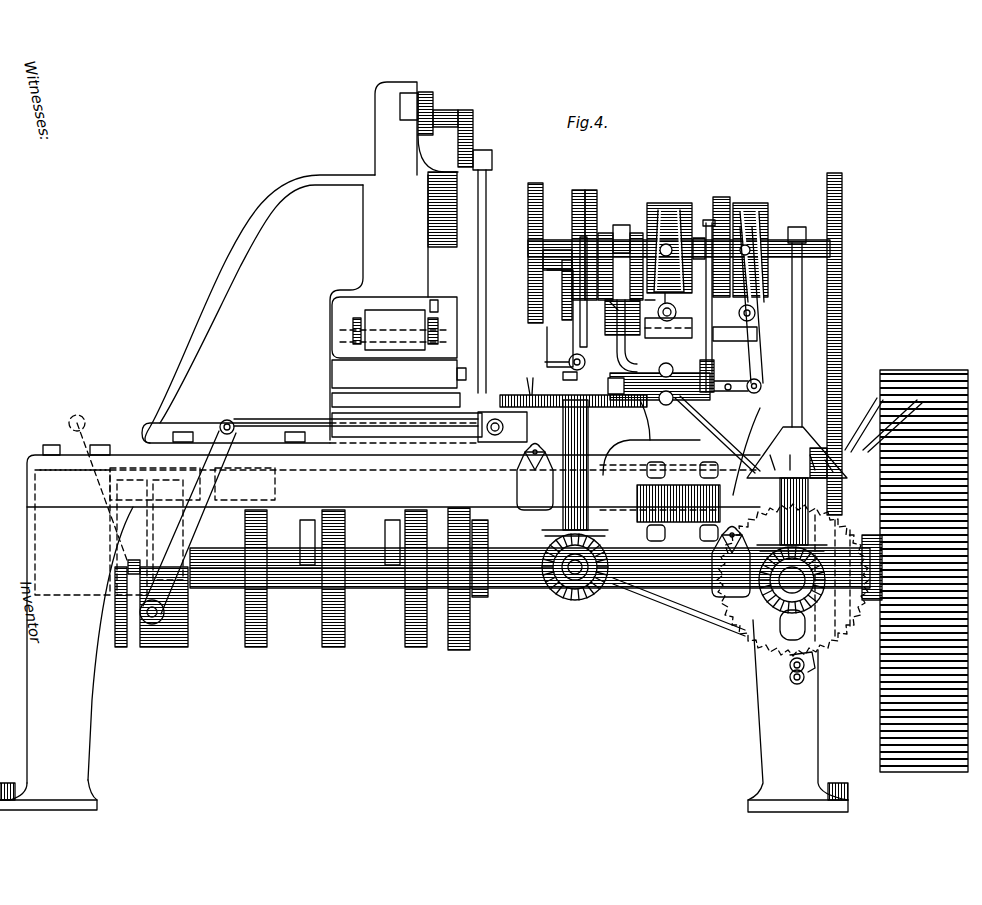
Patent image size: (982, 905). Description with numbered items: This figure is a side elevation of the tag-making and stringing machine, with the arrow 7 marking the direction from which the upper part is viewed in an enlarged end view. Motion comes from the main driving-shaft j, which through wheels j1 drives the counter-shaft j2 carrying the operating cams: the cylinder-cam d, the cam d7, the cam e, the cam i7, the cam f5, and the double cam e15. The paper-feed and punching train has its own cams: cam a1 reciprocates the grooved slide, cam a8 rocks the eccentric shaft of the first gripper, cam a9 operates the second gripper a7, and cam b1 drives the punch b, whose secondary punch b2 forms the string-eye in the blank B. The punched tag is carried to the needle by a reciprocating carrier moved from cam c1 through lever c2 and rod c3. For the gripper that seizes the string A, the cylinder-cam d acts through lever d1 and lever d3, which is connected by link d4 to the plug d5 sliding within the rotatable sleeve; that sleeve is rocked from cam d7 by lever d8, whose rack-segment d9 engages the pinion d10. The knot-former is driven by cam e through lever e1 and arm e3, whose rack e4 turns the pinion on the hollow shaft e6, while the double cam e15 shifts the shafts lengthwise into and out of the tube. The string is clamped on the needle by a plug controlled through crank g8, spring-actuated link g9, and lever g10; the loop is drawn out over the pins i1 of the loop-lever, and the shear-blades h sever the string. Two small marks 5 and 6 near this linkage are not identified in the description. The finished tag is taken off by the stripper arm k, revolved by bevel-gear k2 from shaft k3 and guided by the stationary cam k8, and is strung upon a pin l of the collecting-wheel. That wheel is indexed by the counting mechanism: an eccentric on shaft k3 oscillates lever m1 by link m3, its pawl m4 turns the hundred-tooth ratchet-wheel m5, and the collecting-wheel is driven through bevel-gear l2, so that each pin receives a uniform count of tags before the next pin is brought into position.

The punch b is at (412, 220).
The secondary punch b2 is at (438, 306).
The second gripper a7 is at (442, 320).
The arrow 7 is at (518, 234).
The double cam e15 is at (540, 183).
The cam f5 is at (578, 190).
The cam i7 is at (592, 192).
The counter-shaft j2 is at (552, 250).
The crank g8 is at (580, 250).
The spring-actuated link g9 is at (604, 235).
The lever g10 is at (634, 235).
The cam e is at (673, 210).
The cam d7 is at (724, 200).
The cylinder-cam d is at (762, 210).
The hollow shaft e6 is at (547, 352).
The shear-blades h is at (586, 362).
The rack e4 is at (566, 374).
The arm k is at (528, 380).
The stationary cam k8 is at (536, 396).
The arm e3 is at (658, 311).
The lever e1 is at (680, 318).
The section line 5 is at (648, 300).
The section line 6 is at (613, 298).
The lever d1 is at (756, 313).
The lever d8 is at (706, 340).
The rack-segment d9 is at (716, 364).
The plug d5 is at (730, 380).
The lever d3 is at (758, 356).
The link d4 is at (755, 392).
The pinion d10 is at (706, 398).
The pins l is at (798, 445).
The pins i1 is at (797, 452).
The wheels j1 is at (845, 655).
The rod c3 is at (235, 424).
The lever c2 is at (188, 527).
The cam c1 is at (151, 613).
The cam a8 is at (256, 588).
The cam a9 is at (323, 588).
The cam a1 is at (406, 588).
The cam b1 is at (469, 579).
The main driving-shaft j is at (510, 580).
The bevel-gear k2 is at (548, 534).
The shaft k3 is at (575, 585).
The link m3 is at (668, 604).
The string A is at (636, 485).
The tag blank B is at (633, 524).
The bevel-gear l2 is at (826, 568).
The ratchet-wheel m5 is at (799, 580).
The lever m1 is at (790, 668).
The pawl m4 is at (808, 664).